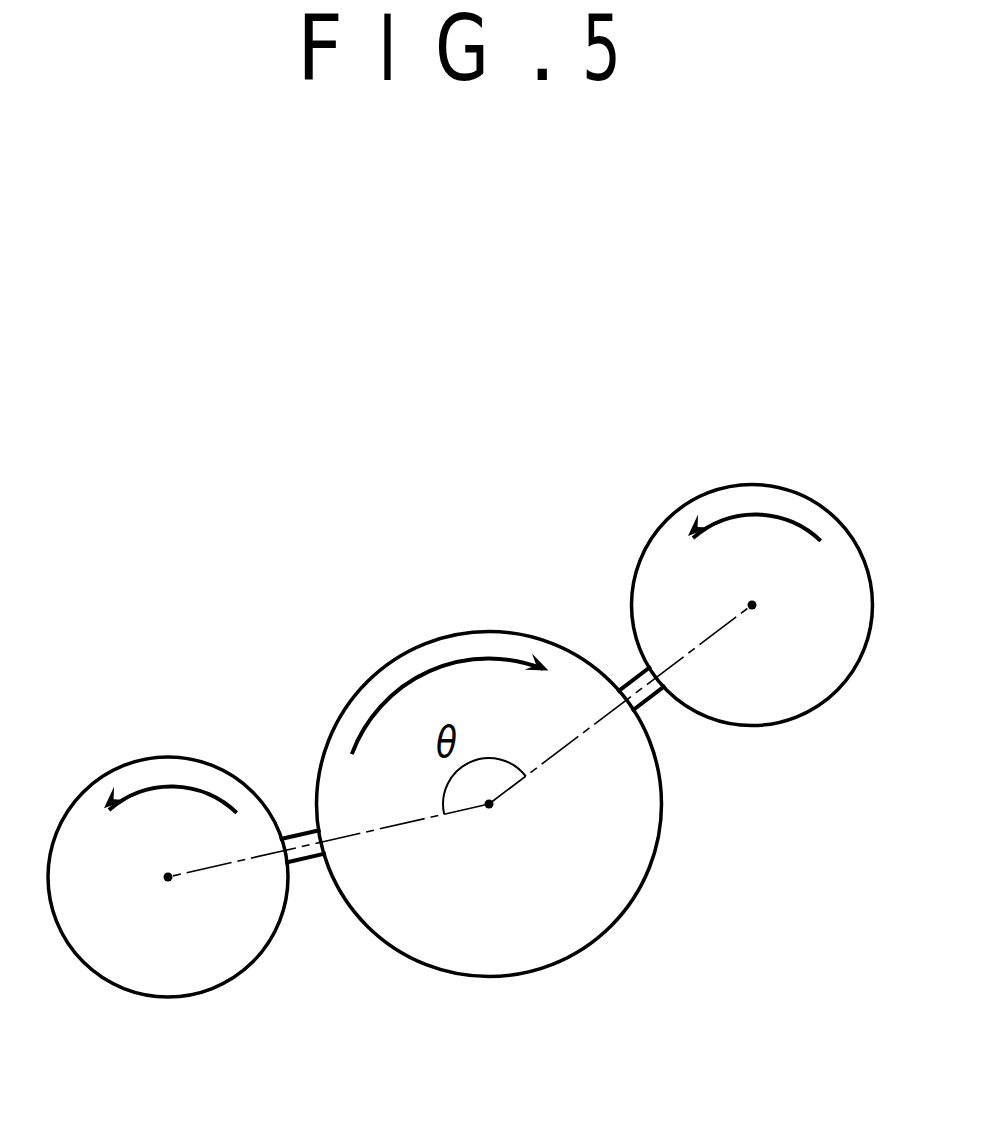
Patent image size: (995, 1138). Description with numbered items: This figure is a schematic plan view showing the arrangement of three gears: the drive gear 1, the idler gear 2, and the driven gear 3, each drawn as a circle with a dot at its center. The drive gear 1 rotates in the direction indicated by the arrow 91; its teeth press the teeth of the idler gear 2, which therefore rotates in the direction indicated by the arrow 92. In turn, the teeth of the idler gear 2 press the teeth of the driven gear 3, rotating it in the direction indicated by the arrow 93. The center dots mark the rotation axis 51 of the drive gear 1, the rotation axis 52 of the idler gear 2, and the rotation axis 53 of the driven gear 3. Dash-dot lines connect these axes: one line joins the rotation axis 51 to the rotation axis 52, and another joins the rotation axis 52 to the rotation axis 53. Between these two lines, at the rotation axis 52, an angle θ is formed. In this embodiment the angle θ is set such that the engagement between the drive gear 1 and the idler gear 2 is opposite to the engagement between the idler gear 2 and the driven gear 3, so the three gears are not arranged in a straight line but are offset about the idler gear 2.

The drive gear 1 is at (749, 705).
The idler gear 2 is at (498, 948).
The driven gear 3 is at (167, 977).
The rotation axis 51 is at (752, 605).
The rotation axis 52 is at (489, 804).
The rotation axis 53 is at (168, 877).
The arrow 91 is at (755, 512).
The arrow 92 is at (480, 657).
The arrow 93 is at (168, 783).